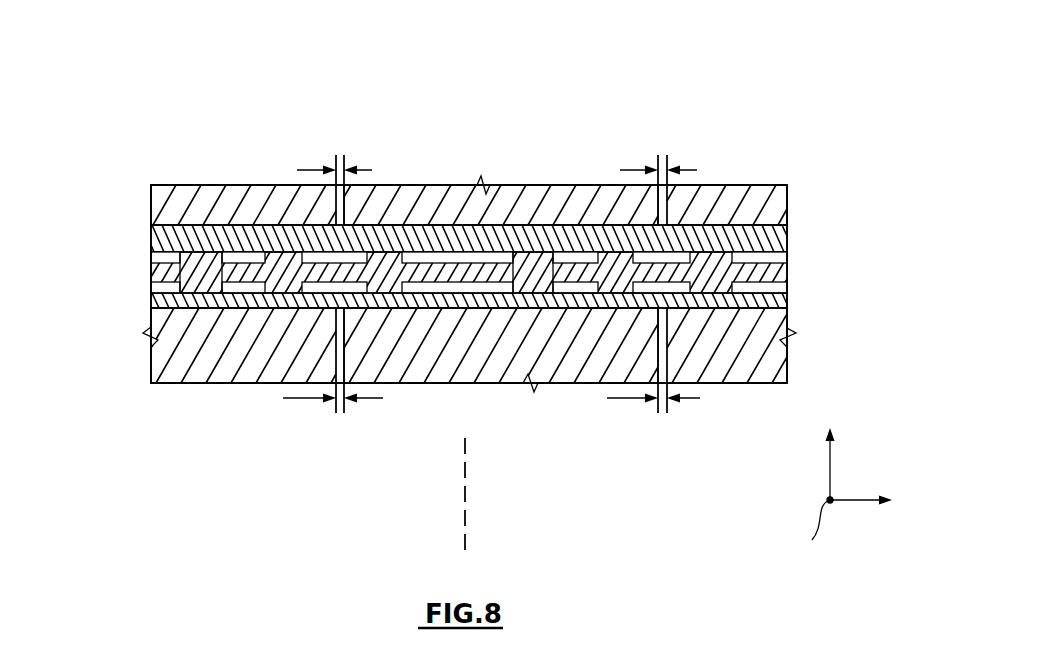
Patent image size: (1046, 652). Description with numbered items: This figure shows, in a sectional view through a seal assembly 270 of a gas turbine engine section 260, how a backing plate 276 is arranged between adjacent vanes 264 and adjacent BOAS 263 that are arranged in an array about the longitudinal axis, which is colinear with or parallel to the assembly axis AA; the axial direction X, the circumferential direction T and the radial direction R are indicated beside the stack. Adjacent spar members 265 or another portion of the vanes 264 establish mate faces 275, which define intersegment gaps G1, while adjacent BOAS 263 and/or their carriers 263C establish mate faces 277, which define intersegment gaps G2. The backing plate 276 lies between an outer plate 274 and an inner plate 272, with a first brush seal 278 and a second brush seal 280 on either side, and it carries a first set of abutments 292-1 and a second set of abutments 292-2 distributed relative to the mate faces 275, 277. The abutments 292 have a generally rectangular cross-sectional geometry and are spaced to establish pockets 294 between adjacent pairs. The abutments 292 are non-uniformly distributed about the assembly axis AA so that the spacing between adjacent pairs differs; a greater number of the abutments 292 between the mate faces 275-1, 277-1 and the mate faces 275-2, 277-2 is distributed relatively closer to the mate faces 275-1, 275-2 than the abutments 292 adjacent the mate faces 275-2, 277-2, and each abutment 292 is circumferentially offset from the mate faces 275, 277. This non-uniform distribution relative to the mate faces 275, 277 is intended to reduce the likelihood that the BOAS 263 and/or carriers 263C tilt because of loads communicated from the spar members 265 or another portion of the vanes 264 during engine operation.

The capacitor structure 260 is at (101, 78).
The layer stack 270 is at (886, 234).
The bottom layer 272 is at (780, 302).
The top layer 274 is at (777, 242).
The mate faces 275 is at (658, 350).
The mate face 275-1 is at (336, 360).
The mate face 275-2 is at (344, 343).
The backing plate 276 is at (778, 273).
The mate faces 277 is at (336, 203).
The mate face 277-1 is at (658, 200).
The mate face 277-2 is at (344, 203).
The lower intermediate layer 278 is at (780, 288).
The upper intermediate layer 280 is at (777, 258).
The abutments 292 is at (533, 253).
The first set of abutments 292-1 is at (135, 302).
The second set of abutments 292-2 is at (138, 242).
The edge region 294 is at (146, 290).
The BOAS 263 is at (201, 174).
The carriers 263C is at (437, 174).
The vanes 264 is at (217, 398).
The spar members 265 is at (410, 398).
The intersegment gaps G1 is at (302, 398).
The intersegment gaps G2 is at (372, 170).
The assembly axis AA is at (467, 497).
The axial direction X is at (829, 452).
The circumferential direction T is at (869, 501).
The R direction R is at (812, 529).